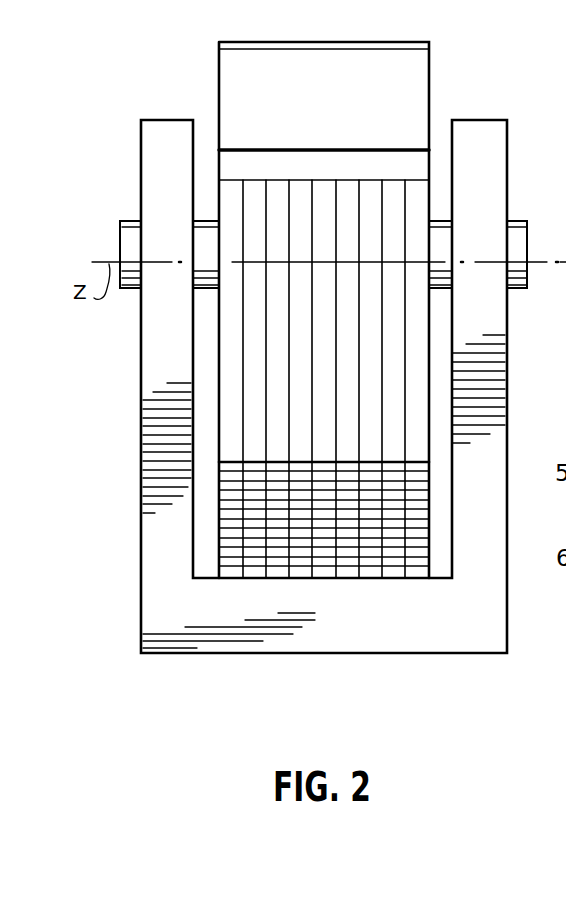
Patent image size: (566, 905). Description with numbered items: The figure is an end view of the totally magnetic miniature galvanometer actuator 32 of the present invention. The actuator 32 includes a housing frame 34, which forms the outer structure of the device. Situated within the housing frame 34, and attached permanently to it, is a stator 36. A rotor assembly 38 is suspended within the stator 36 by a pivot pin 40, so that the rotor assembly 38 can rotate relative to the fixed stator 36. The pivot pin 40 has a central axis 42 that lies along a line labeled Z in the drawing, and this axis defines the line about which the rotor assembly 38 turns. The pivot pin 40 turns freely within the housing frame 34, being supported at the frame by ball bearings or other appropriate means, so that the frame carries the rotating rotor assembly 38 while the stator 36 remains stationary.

The miniature galvanometer actuator 32 is at (183, 660).
The housing frame 34 is at (478, 643).
The stator 36 is at (430, 490).
The rotor assembly 38 is at (216, 89).
The pivot pin 40 is at (526, 240).
The central axis 42 is at (120, 240).